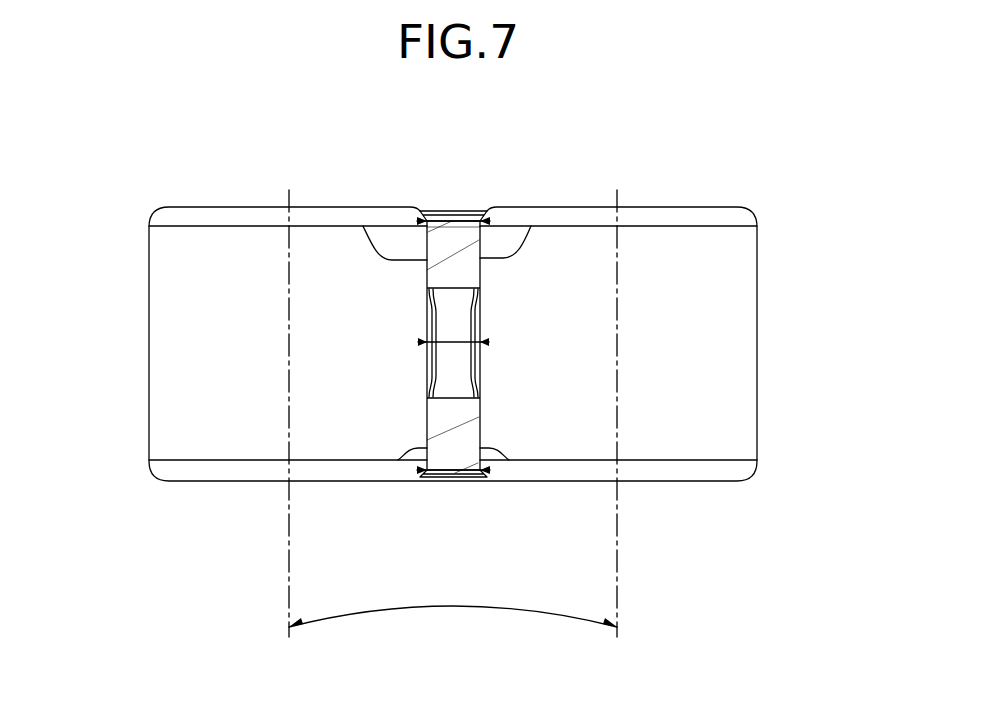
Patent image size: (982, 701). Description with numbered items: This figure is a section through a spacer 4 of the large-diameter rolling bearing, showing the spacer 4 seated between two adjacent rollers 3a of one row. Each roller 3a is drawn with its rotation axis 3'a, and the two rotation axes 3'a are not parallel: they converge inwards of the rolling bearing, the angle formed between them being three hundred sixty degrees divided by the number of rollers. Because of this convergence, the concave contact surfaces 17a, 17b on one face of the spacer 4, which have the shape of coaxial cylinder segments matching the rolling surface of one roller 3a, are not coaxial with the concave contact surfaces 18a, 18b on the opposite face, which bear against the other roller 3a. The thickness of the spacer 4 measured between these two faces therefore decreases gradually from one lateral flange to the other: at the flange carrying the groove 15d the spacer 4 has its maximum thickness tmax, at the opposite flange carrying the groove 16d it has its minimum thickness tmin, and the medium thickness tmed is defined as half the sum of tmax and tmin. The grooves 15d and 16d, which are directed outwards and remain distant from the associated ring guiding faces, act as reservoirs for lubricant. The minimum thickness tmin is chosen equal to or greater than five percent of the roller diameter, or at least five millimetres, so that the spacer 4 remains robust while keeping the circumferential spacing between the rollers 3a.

The rollers 3a is at (148, 346).
The rotation axes 3'a is at (452, 413).
The spacer 4 is at (410, 200).
The groove 15d is at (438, 212).
The groove 16d is at (467, 479).
The concave contact surface 17a is at (500, 472).
The concave contact surface 17b is at (522, 212).
The concave contact surface 18a is at (397, 462).
The concave contact surface 18b is at (362, 224).
The maximum thickness tmax is at (453, 212).
The medium thickness tmed is at (452, 342).
The minimum thickness tmin is at (449, 478).